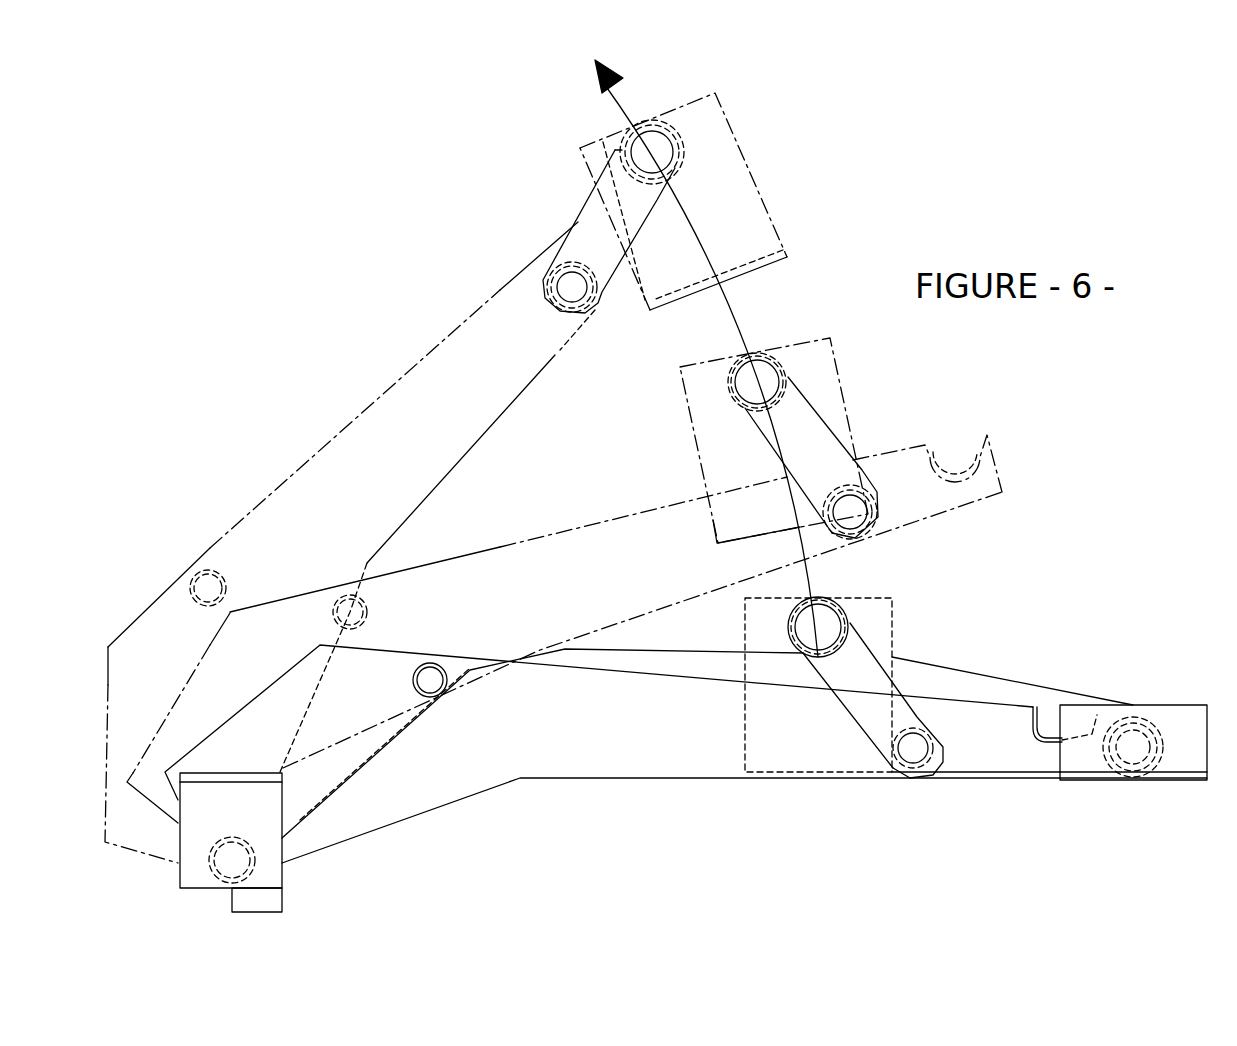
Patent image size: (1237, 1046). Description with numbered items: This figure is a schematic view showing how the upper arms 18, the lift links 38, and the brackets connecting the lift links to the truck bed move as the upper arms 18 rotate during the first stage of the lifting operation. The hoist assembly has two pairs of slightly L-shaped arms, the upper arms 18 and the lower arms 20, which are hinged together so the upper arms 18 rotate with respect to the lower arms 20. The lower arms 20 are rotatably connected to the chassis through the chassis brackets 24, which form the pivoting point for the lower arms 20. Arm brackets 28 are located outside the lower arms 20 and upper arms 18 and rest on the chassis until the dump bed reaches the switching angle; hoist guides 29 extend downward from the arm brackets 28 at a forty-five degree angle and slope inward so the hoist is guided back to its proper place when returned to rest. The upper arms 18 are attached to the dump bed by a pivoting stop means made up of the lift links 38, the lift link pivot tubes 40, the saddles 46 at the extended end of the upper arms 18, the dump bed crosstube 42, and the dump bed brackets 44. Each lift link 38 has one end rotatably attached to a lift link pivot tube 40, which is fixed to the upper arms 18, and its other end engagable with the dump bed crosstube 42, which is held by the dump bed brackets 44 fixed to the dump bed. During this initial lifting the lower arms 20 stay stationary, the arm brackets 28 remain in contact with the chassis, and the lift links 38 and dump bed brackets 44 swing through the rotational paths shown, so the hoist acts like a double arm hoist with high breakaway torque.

The upper arms 18 is at (388, 416).
The lower arms 20 is at (973, 687).
The chassis brackets 24 is at (1163, 722).
The arm brackets 28 is at (268, 853).
The hoist guides 29 is at (262, 900).
The lift links 38 is at (585, 242).
The lift link pivot tubes 40 is at (571, 288).
The dump bed crosstube 42 is at (633, 158).
The dump bed brackets 44 is at (747, 207).
The saddles 46 is at (684, 148).